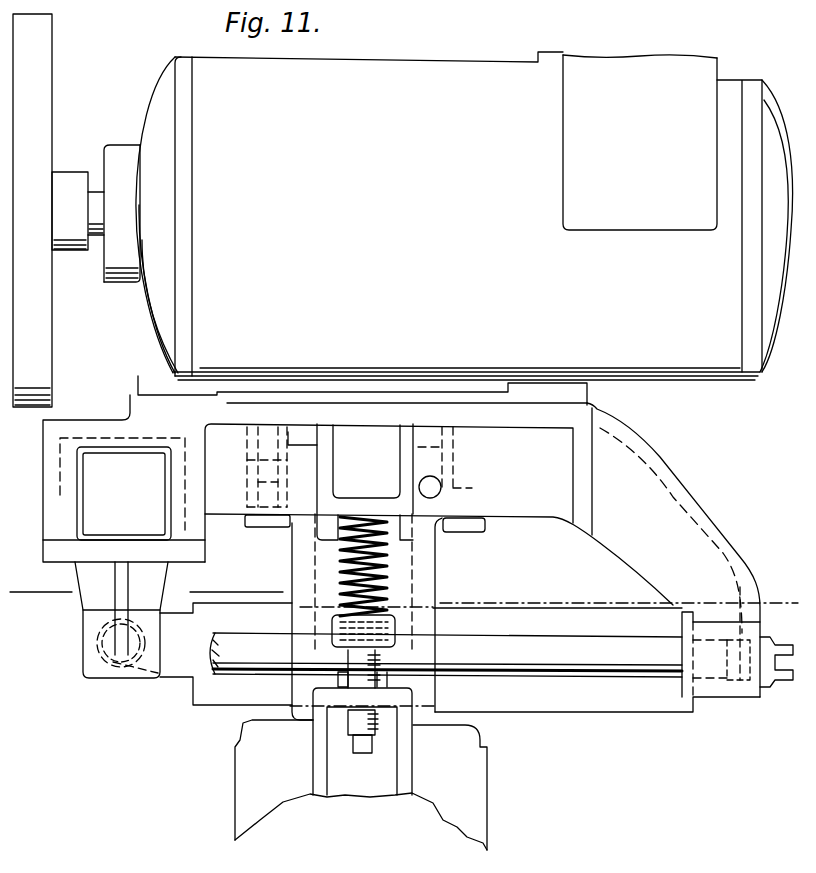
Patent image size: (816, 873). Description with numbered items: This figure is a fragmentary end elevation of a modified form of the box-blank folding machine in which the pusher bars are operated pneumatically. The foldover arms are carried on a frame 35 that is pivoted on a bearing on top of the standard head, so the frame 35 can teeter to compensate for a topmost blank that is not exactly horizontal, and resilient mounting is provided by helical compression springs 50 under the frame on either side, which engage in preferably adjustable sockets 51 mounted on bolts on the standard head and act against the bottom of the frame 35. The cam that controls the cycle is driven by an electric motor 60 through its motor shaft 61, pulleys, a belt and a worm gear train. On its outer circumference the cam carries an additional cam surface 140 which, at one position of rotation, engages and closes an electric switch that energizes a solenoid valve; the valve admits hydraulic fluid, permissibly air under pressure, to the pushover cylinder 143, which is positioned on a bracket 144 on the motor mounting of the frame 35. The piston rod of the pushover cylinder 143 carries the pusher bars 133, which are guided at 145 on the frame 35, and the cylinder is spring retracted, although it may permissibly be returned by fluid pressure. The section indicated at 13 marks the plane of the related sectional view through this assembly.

The additional cam surface 140 is at (52, 14).
The motor shaft 61 is at (97, 195).
The electric motor 60 is at (464, 216).
The bracket 144 is at (678, 515).
The guide 145 is at (713, 668).
The pushover cylinder 143 is at (615, 702).
The pusher bars 133 is at (230, 660).
The helical compression springs 50 is at (373, 563).
The adjustable sockets 51 is at (393, 627).
The frame 35 is at (468, 790).
The section line 13- 13 is at (35, 568).